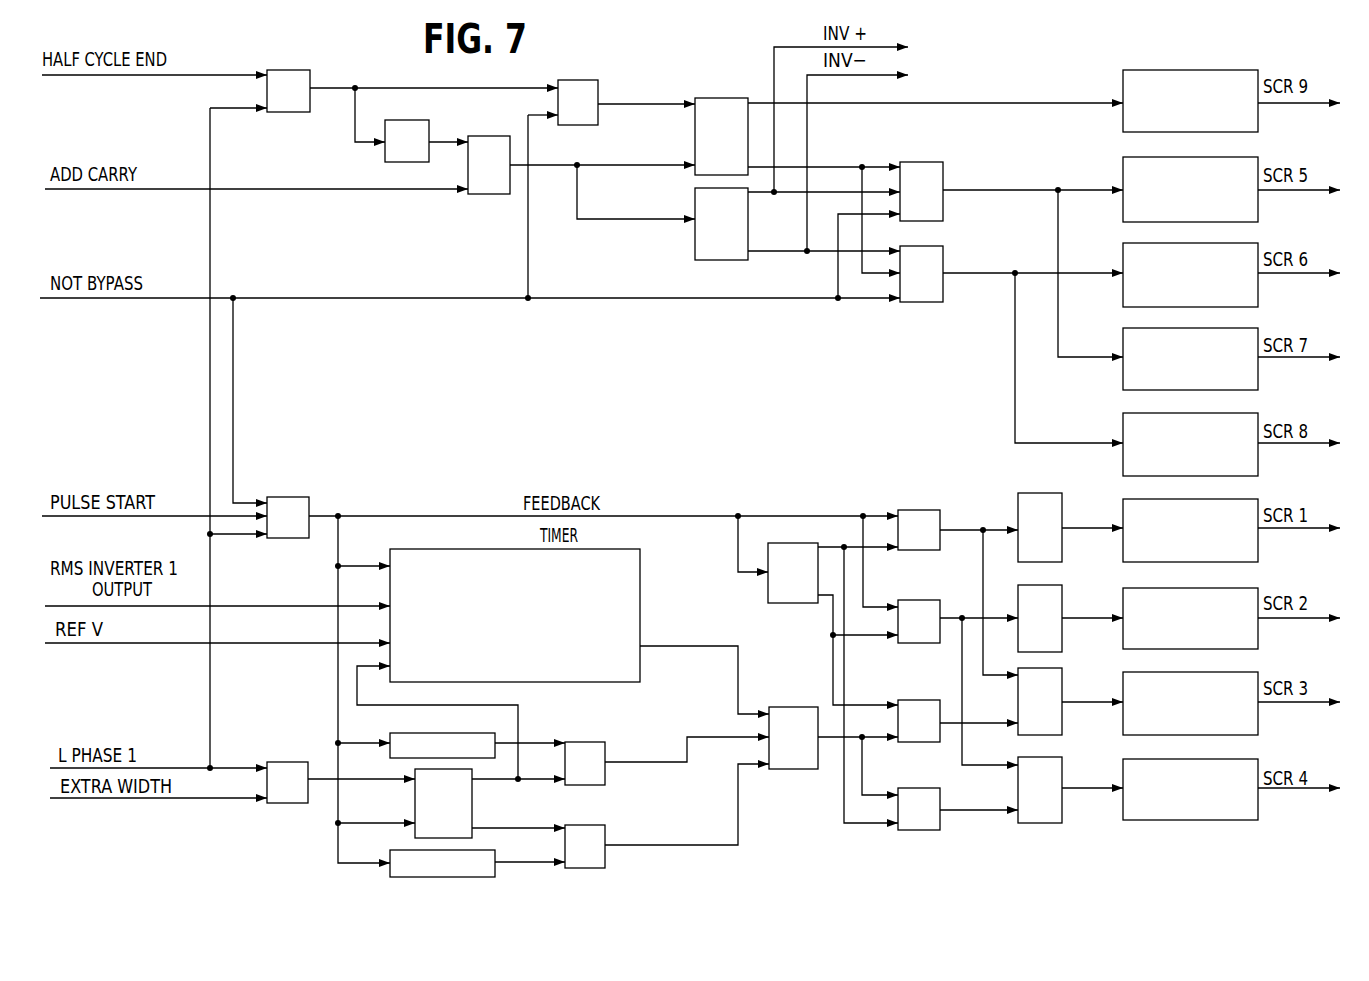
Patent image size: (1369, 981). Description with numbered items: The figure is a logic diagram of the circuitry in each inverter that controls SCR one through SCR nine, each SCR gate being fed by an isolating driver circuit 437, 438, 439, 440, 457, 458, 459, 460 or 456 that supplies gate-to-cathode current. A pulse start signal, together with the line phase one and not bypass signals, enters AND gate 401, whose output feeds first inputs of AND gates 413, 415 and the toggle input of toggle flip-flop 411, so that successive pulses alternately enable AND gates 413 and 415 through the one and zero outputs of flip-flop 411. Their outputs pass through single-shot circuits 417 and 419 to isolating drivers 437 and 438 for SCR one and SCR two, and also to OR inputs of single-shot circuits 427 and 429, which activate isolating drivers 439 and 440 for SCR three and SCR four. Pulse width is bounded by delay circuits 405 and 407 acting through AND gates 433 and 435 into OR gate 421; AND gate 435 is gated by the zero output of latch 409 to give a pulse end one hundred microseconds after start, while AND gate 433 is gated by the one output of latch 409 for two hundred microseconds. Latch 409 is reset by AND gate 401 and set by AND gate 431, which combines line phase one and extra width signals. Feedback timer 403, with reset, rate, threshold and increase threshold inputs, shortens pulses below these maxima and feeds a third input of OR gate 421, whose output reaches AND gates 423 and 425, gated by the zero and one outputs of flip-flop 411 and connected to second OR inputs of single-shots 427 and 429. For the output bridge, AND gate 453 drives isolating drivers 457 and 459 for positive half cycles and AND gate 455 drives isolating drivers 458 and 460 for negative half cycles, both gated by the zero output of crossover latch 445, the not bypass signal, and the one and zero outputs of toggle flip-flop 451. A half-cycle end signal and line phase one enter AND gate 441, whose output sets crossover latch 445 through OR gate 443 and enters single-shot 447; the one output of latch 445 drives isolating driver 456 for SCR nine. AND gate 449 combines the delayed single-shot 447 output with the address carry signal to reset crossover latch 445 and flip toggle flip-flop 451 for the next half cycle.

The AND gate 401 is at (294, 497).
The feedback timer 403 is at (409, 549).
The delay circuit 405 is at (390, 734).
The delay circuit 407 is at (505, 857).
The latch 409 is at (473, 795).
The toggle flip-flop 411 is at (768, 601).
The AND gate 413 is at (906, 510).
The AND gate 415 is at (915, 600).
The single-shot circuit 417 is at (1018, 506).
The single-shot circuit 419 is at (1019, 585).
The OR gate 421 is at (780, 707).
The AND gate 423 is at (918, 700).
The AND gate 425 is at (921, 788).
The single-shot circuit 427 is at (1062, 684).
The single-shot circuit 429 is at (1018, 793).
The AND gate 431 is at (306, 762).
The AND gate 433 is at (601, 742).
The AND gate 435 is at (606, 866).
The isolating driver circuit 437 is at (1258, 500).
The isolating driver circuit 438 is at (1128, 588).
The isolating driver circuit 439 is at (1258, 725).
The isolating driver circuit 440 is at (1123, 762).
The AND gate 441 is at (311, 79).
The OR gate 443 is at (599, 85).
The crossover latch 445 is at (735, 96).
The single-shot 447 is at (429, 122).
The AND gate 449 is at (496, 195).
The toggle flip-flop 451 is at (709, 261).
The AND gate 453 is at (929, 161).
The AND gate 455 is at (944, 257).
The isolating driver circuit 456 is at (1124, 129).
The isolating driver circuit 457 is at (1258, 161).
The isolating driver circuit 458 is at (1258, 286).
The isolating driver circuit 459 is at (1123, 338).
The isolating driver circuit 460 is at (1123, 422).